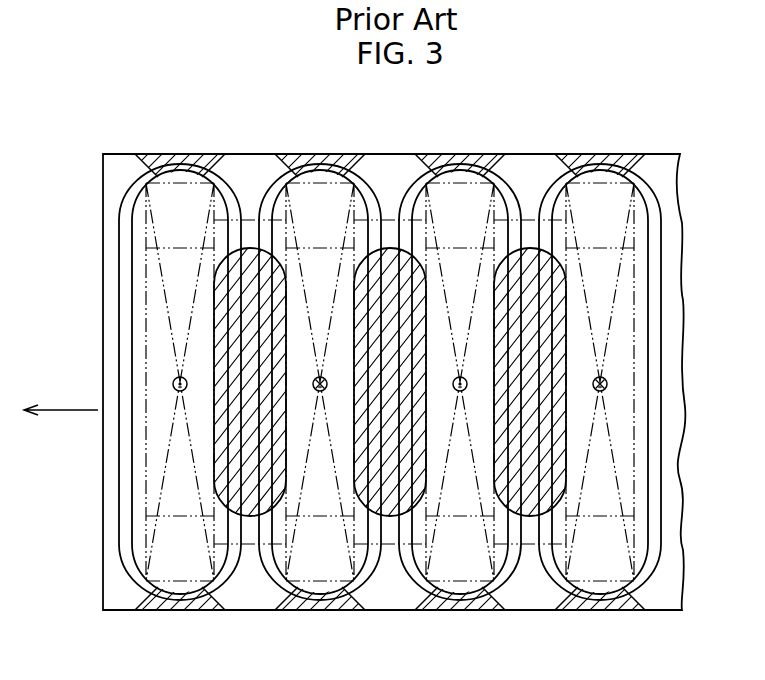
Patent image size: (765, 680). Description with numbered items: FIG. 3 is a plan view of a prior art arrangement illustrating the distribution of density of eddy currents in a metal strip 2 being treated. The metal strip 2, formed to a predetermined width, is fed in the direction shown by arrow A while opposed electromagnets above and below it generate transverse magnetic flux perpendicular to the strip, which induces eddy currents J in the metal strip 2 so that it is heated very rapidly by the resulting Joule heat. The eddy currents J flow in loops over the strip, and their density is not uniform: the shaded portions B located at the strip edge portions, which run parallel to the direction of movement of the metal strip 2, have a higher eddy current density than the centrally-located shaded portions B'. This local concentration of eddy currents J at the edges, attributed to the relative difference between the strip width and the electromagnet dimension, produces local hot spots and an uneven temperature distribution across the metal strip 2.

The metal strip 2 is at (258, 154).
The eddy currents J is at (119, 218).
The shaded portions B is at (397, 376).
The centrally-located shaded portions B' is at (382, 380).
The arrow A is at (53, 409).